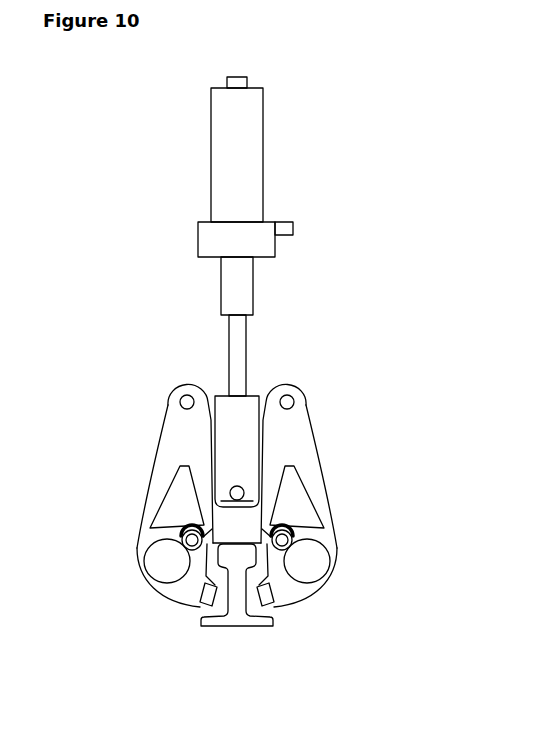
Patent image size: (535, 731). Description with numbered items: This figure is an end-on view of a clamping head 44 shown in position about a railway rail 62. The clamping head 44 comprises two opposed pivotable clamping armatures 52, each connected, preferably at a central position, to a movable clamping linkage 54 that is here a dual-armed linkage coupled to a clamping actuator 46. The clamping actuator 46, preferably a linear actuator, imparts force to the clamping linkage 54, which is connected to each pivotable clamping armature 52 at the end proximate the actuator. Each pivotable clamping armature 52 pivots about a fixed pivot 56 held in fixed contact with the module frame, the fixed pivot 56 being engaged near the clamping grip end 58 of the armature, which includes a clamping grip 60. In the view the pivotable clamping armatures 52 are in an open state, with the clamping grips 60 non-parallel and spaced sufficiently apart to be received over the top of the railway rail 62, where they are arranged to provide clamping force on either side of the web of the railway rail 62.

The clamping head 44 is at (171, 204).
The clamping actuator 46 is at (237, 74).
The pivotable clamping armature 52 is at (160, 475).
The clamping linkage 54 is at (253, 394).
The fixed pivot 56 is at (177, 537).
The clamping grip end 58 is at (165, 600).
The clamping grip 60 is at (206, 598).
The railway rail 62 is at (237, 627).